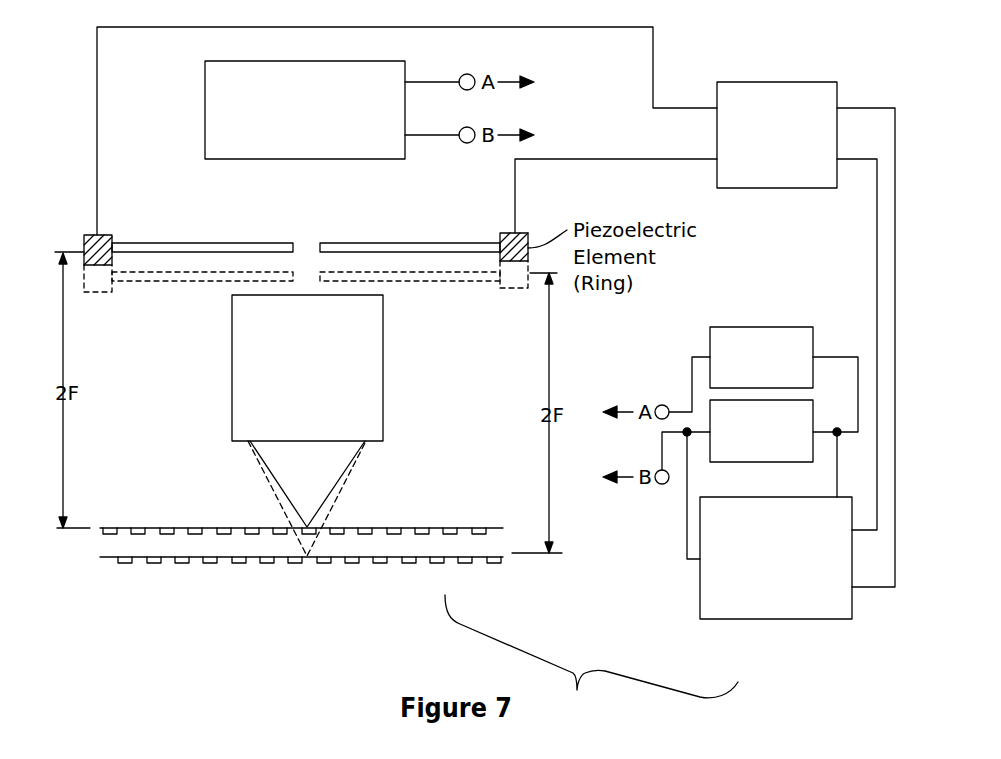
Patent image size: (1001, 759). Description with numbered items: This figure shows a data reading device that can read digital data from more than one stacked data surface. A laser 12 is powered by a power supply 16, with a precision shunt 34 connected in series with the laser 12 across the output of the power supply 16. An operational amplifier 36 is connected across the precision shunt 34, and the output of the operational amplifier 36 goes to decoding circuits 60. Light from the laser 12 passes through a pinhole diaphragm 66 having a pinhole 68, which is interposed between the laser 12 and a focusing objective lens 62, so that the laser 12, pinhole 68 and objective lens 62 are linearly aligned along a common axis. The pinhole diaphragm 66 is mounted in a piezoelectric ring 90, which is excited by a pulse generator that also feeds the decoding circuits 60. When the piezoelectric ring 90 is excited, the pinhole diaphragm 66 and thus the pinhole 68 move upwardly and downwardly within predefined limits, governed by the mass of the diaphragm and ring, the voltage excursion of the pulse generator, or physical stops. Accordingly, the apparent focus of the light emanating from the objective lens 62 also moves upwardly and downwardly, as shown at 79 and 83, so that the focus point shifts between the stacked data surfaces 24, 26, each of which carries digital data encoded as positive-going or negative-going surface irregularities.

The laser 12 is at (315, 145).
The piezoelectric ring 90 is at (783, 90).
The pinhole diaphragm 66 is at (195, 243).
The pinhole 68 is at (307, 243).
The focusing objective lens 62 is at (368, 382).
The focus position 79 is at (332, 468).
The focus position 83 is at (335, 503).
The data surface 24 is at (127, 528).
The data surface 26 is at (167, 558).
The power supply 16 is at (765, 327).
The precision shunt 34 is at (748, 460).
The operational amplifier 36 is at (807, 569).
The decoding circuits 60 is at (820, 608).